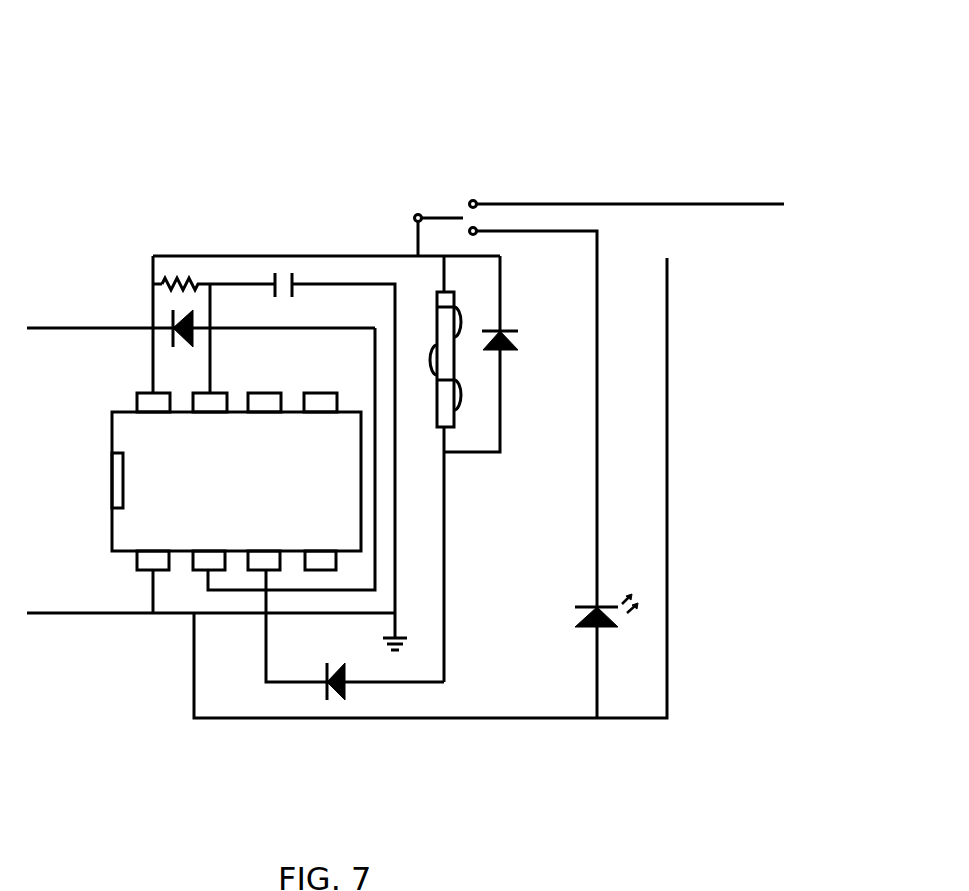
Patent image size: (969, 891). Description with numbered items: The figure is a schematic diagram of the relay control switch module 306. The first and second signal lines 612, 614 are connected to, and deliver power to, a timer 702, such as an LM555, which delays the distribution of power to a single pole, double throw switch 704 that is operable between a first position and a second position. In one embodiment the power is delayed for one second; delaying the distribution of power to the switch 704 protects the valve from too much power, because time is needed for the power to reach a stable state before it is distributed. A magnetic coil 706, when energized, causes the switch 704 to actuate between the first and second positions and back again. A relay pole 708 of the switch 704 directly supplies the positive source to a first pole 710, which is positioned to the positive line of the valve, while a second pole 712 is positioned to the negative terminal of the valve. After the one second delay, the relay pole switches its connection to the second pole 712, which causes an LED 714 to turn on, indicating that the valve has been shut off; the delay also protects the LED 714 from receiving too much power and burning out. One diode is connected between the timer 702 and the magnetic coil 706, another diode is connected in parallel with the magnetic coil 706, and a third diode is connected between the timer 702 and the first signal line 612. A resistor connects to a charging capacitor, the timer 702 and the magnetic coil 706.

The relay control switch module 306 is at (138, 93).
The first signal line 612 is at (47, 327).
The second signal line 614 is at (77, 615).
The timer 702 is at (110, 440).
The single pole, double throw (SPDT) switch 704 is at (437, 207).
The magnetic coil 706 is at (443, 418).
The relay pole 708 is at (407, 220).
The first pole 710 is at (478, 193).
The second pole 712 is at (478, 235).
The LED 714 is at (572, 596).